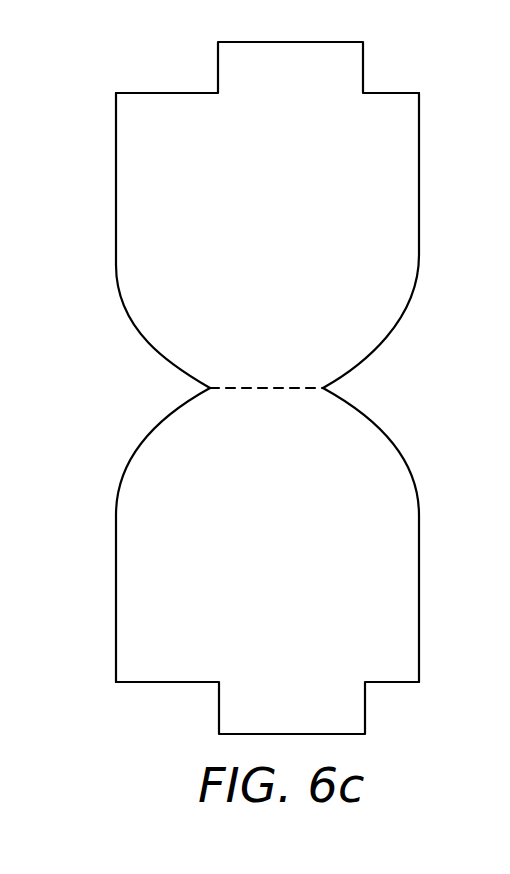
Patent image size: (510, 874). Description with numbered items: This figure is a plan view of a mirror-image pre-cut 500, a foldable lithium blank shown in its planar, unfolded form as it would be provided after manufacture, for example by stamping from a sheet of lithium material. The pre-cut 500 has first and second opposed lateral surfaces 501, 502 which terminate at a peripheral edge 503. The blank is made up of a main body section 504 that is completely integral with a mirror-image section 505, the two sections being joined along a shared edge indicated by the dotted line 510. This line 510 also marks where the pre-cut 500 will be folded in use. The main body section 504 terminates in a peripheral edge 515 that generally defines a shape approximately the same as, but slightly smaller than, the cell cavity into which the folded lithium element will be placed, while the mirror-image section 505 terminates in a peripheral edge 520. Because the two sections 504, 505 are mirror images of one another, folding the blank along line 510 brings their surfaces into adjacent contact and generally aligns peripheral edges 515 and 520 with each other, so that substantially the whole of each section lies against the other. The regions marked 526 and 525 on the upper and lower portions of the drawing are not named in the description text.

The mirror-image pre-cut 500 is at (178, 78).
The peripheral edge 520 is at (116, 216).
The mirror-image section 505 is at (118, 273).
The upper die region 526 is at (280, 203).
The dotted line 510 is at (245, 388).
The main body section 504 is at (138, 452).
The second lateral surface 502 is at (145, 540).
The peripheral edge 503 is at (116, 623).
The peripheral edge 515 is at (116, 667).
The first lateral surface 501 is at (312, 625).
The lower die cavity region 525 is at (276, 545).